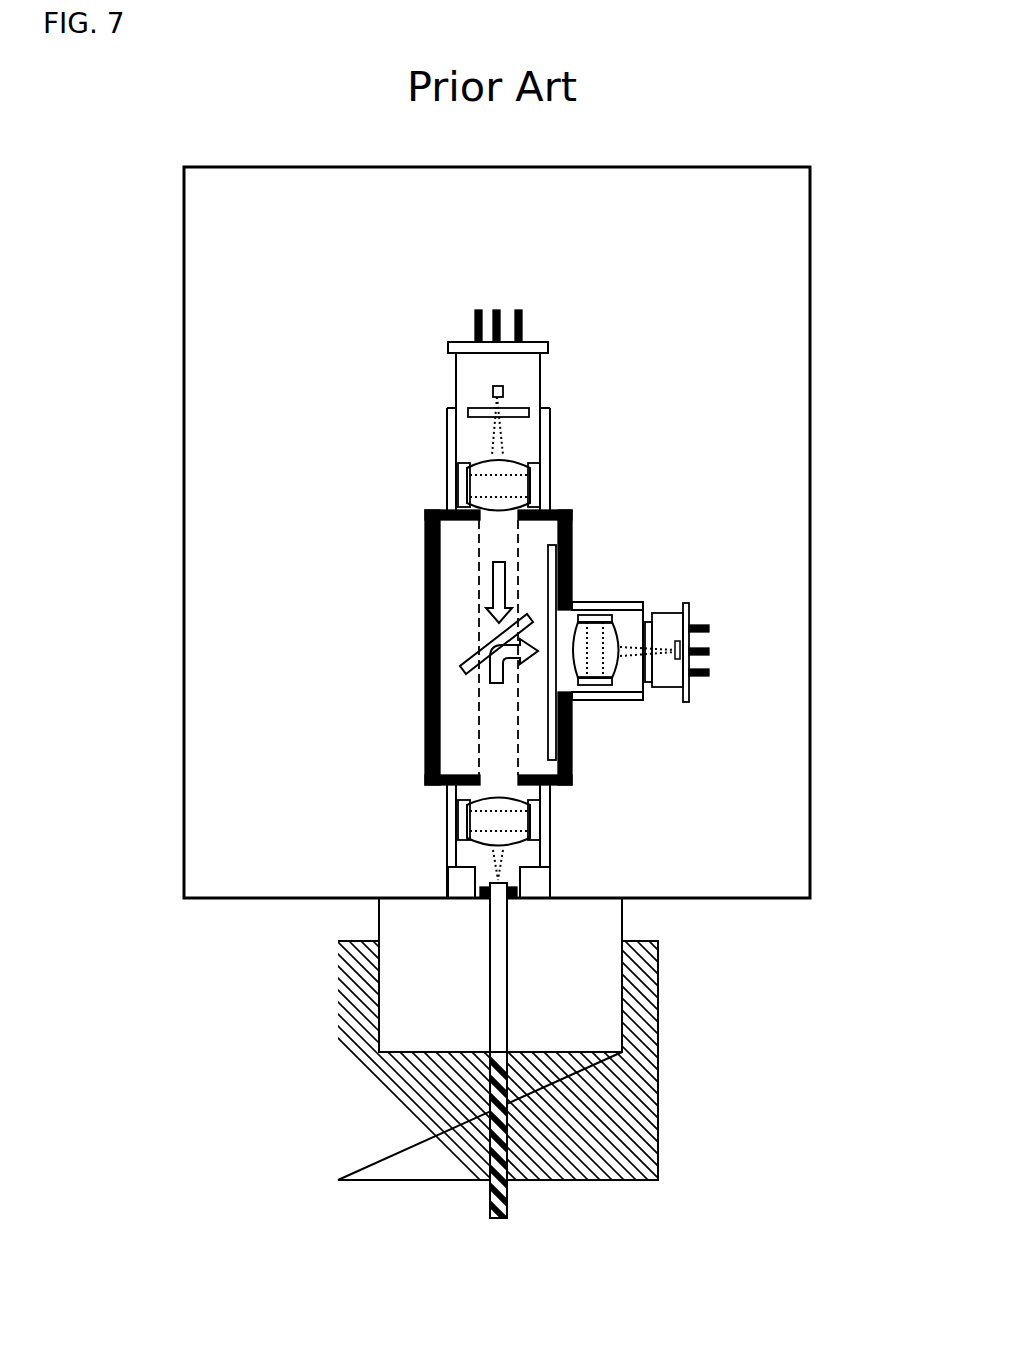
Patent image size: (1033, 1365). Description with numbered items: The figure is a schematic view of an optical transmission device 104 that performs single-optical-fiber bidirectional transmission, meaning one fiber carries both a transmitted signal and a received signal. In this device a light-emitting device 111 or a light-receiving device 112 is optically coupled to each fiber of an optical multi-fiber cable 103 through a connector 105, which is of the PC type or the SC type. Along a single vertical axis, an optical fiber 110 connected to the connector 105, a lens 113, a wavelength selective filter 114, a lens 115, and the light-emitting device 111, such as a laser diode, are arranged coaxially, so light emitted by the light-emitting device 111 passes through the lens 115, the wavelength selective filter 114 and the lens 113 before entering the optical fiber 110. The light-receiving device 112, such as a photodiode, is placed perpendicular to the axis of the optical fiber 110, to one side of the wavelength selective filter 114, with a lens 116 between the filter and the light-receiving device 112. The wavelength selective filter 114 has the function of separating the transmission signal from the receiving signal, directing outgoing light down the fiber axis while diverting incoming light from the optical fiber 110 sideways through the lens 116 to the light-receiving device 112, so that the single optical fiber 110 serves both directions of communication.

The optical multi-fiber cable 103 is at (490, 1195).
The optical transmission device 104 is at (810, 427).
The connector 105 is at (658, 1037).
The optical fiber 110 is at (490, 965).
The light-emitting device 111 is at (493, 392).
The light-receiving device 112 is at (693, 646).
The lens 113 is at (465, 845).
The wavelength selective filter 114 is at (468, 652).
The lens 115 is at (466, 488).
The lens 116 is at (618, 668).